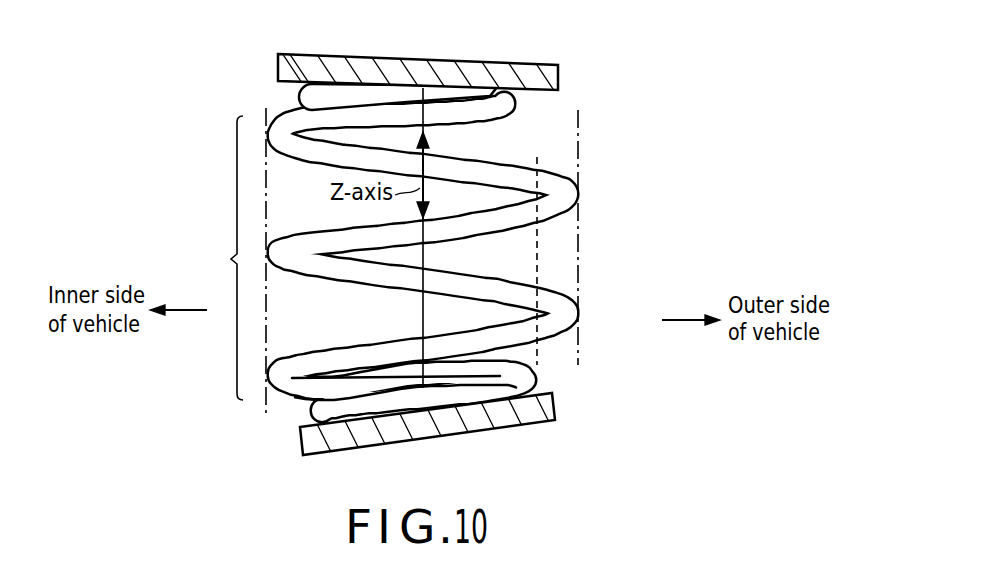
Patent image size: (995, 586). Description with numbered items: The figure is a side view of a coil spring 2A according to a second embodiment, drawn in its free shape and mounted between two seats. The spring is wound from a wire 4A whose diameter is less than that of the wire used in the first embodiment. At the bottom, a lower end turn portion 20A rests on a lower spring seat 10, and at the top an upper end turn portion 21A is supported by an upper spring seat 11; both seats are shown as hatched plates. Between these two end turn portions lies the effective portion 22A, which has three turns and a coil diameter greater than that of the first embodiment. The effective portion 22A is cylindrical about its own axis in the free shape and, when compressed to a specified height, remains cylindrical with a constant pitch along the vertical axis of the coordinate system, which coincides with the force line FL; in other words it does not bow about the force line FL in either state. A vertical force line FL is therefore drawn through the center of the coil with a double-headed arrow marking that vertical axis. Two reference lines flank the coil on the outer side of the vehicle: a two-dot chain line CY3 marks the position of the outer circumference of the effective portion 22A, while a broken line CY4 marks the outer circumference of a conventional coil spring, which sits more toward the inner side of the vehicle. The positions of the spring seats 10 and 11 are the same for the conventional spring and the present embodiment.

The coil spring 2A is at (499, 247).
The wire 4A is at (499, 171).
The lower spring seat 10 is at (538, 387).
The upper spring seat 11 is at (537, 92).
The lower end turn portion 20A is at (485, 394).
The upper end turn portion 21A is at (347, 93).
The effective portion 22A is at (215, 258).
The two-dot chain line CY3 is at (578, 287).
The broken line CY4 is at (537, 243).
The force line FL is at (423, 255).